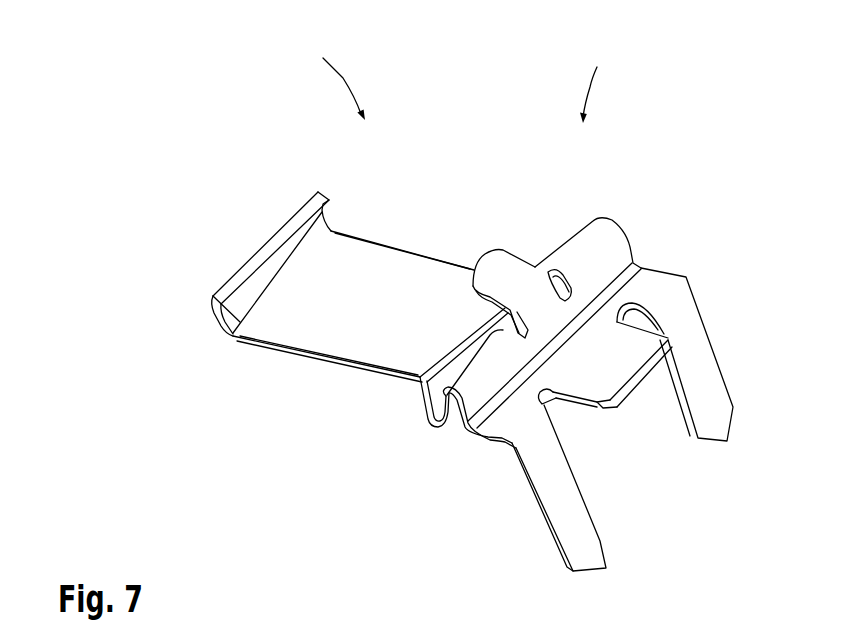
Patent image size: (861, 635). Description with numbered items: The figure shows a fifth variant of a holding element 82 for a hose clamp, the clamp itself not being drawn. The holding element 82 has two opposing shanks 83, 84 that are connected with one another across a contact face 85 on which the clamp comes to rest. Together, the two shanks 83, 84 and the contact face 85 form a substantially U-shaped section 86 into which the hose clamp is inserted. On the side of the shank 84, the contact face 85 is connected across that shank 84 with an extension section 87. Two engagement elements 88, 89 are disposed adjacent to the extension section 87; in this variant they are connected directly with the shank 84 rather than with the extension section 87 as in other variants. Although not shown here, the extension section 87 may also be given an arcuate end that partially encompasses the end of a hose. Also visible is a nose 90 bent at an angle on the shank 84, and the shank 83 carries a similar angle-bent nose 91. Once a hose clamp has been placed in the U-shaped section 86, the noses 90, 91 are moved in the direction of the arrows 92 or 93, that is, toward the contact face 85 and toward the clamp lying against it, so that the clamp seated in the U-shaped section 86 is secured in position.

The holding element 82 is at (162, 317).
The shank 83 is at (207, 308).
The shank 84 is at (437, 430).
The contact face 85 is at (378, 290).
The U-shaped section 86 is at (322, 397).
The extension section 87 is at (604, 384).
The engagement element 88 is at (578, 541).
The engagement element 89 is at (697, 378).
The nose 90 is at (517, 276).
The nose 91 is at (297, 212).
The arrow 92 is at (343, 75).
The arrow 93 is at (587, 82).